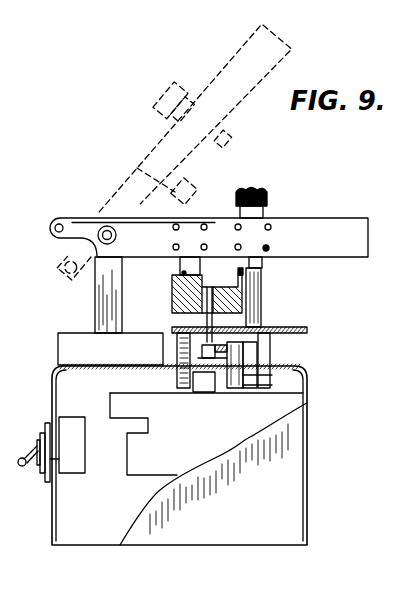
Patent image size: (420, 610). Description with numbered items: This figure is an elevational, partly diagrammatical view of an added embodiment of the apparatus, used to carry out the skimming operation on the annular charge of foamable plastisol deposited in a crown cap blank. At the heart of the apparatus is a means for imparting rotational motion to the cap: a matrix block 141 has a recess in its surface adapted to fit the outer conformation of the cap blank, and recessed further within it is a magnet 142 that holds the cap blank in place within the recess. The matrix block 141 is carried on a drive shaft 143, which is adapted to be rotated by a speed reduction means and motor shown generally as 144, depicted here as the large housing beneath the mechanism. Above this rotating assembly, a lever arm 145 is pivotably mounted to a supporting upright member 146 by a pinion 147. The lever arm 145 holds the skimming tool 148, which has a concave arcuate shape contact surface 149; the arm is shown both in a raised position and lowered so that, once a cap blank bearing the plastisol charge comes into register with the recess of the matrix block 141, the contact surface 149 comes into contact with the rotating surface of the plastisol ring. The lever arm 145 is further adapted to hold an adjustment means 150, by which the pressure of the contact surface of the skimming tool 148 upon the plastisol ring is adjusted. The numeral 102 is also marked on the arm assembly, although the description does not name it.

The bolt 102 is at (268, 249).
The matrix block 141 is at (258, 280).
The magnet 142 is at (242, 295).
The drive shaft 143 is at (248, 294).
The speed reduction means and motor 144 is at (290, 404).
The lever arm 145 is at (347, 223).
The supporting upright member 146 is at (95, 308).
The pinion 147 is at (103, 229).
The skimming tool 148 is at (136, 168).
The concave arcuate shape contact surface 149 is at (180, 265).
The adjustment means 150 is at (268, 193).